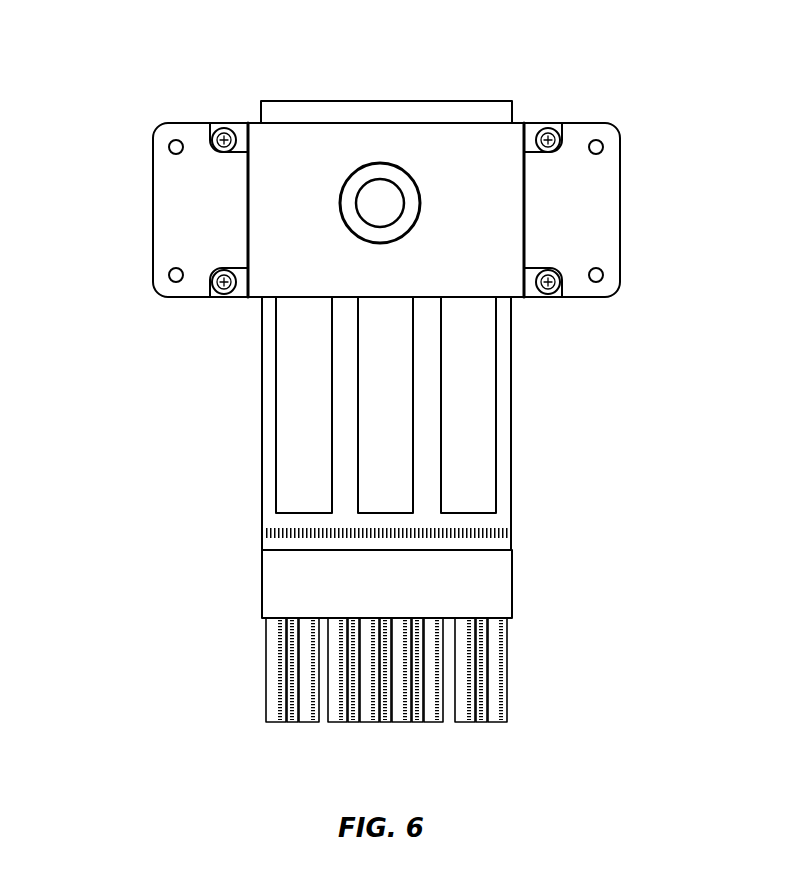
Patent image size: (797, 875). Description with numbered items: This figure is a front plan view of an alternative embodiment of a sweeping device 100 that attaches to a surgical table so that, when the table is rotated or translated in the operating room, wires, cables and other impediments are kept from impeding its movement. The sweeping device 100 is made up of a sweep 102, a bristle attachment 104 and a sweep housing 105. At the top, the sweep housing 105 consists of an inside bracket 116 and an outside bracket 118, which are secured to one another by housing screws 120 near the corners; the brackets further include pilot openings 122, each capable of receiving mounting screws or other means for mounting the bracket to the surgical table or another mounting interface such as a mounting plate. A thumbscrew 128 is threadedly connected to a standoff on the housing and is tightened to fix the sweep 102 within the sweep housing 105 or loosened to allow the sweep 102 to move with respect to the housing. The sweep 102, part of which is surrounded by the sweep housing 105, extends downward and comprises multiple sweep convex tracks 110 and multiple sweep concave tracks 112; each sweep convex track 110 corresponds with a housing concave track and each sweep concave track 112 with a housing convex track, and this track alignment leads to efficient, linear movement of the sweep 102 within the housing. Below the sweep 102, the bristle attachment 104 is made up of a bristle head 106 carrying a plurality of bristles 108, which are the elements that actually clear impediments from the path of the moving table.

The sweeping device 100 is at (133, 40).
The sweep 102 is at (500, 423).
The bristle attachment 104 is at (255, 550).
The sweep housing 105 is at (637, 125).
The bristle head 106 is at (408, 599).
The bristles 108 is at (515, 620).
The sweep convex track 110 is at (342, 440).
The sweep concave track 112 is at (325, 406).
The inside bracket 116 is at (590, 224).
The outside bracket 118 is at (315, 184).
The housing screws 120 is at (218, 130).
The pilot openings 122 is at (170, 141).
The thumbscrew 128 is at (413, 186).